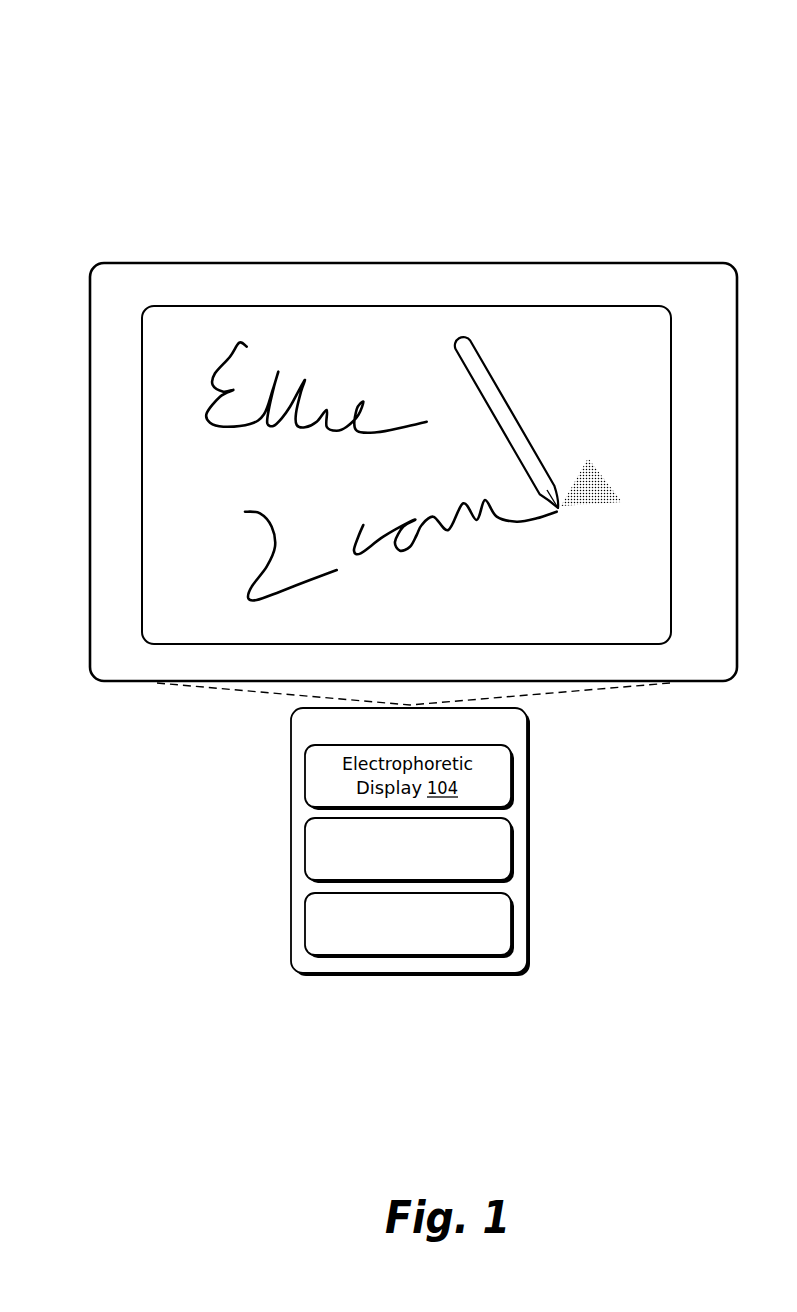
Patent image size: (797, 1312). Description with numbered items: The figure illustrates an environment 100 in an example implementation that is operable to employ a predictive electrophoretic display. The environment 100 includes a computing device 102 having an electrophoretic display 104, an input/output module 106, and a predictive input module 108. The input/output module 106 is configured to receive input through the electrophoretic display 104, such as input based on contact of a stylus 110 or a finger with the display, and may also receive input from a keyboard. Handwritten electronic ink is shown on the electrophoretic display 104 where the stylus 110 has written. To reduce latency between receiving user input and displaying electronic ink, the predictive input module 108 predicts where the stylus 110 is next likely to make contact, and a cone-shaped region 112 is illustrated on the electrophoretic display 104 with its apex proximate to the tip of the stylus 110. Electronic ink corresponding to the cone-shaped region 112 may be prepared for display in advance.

The environment 100 is at (122, 78).
The computing device 102 is at (507, 736).
The electrophoretic display 104 is at (413, 646).
The input/output module 106 is at (460, 870).
The predictive input module 108 is at (460, 943).
The stylus 110 is at (495, 381).
The cone-shaped region 112 is at (590, 484).